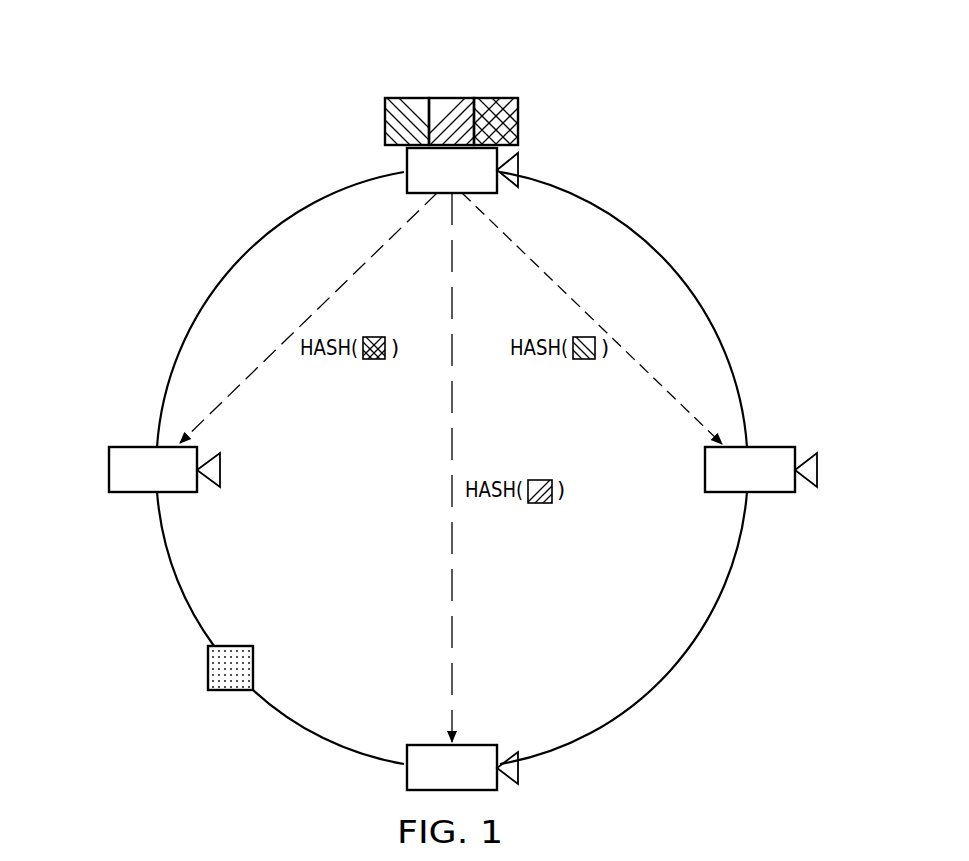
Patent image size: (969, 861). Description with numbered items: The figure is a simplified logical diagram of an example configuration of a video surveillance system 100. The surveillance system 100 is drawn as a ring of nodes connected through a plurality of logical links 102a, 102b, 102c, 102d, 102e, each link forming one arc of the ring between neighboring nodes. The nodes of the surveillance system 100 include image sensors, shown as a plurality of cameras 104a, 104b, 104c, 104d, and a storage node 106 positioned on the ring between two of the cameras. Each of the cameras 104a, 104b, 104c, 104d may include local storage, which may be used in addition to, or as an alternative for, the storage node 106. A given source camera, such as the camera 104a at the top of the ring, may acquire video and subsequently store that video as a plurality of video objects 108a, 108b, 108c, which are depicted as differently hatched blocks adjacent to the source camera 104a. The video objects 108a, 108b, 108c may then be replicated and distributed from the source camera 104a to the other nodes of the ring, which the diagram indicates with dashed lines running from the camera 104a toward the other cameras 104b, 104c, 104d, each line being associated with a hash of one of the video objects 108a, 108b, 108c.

The video surveillance system 100 is at (250, 146).
The logical link 102a is at (697, 250).
The logical link 102b is at (672, 671).
The logical link 102c is at (322, 740).
The logical link 102d is at (168, 572).
The logical link 102e is at (232, 265).
The camera 104a is at (520, 168).
The camera 104b is at (818, 468).
The camera 104c is at (520, 772).
The camera 104d is at (108, 470).
The storage node 106 is at (208, 668).
The video object 108a is at (413, 98).
The video object 108b is at (463, 98).
The video object 108c is at (497, 98).